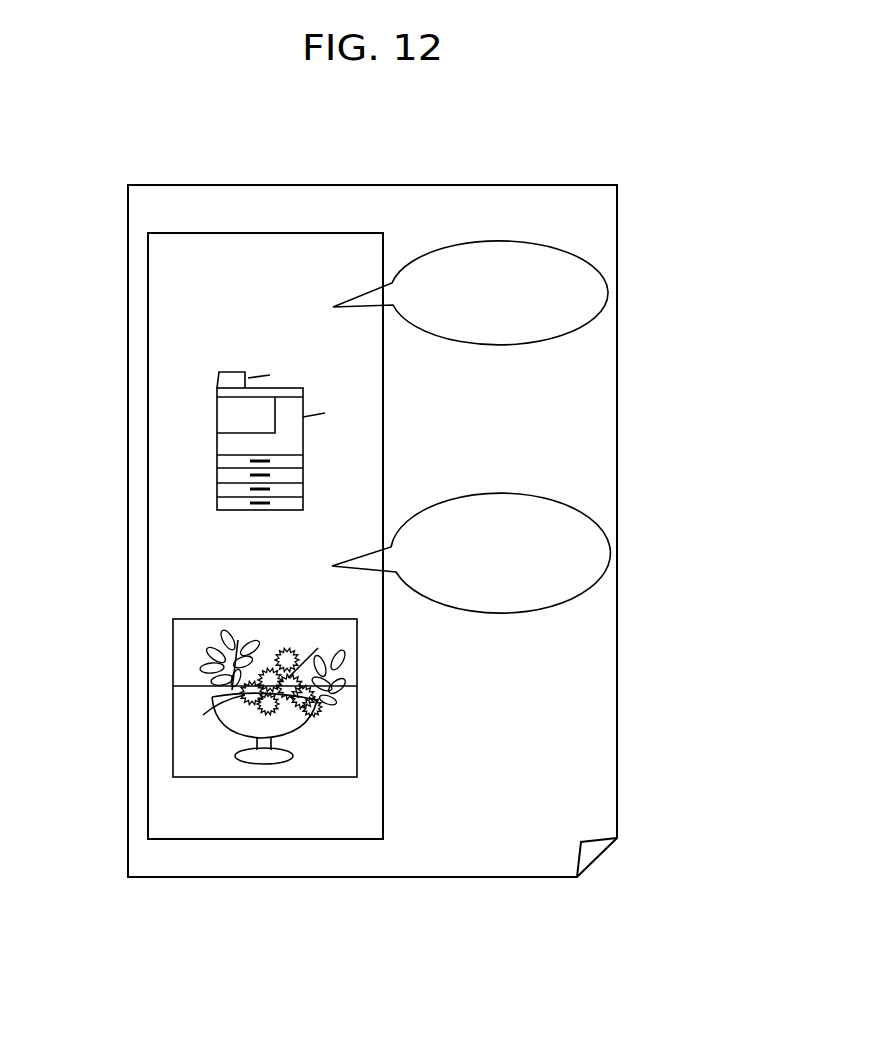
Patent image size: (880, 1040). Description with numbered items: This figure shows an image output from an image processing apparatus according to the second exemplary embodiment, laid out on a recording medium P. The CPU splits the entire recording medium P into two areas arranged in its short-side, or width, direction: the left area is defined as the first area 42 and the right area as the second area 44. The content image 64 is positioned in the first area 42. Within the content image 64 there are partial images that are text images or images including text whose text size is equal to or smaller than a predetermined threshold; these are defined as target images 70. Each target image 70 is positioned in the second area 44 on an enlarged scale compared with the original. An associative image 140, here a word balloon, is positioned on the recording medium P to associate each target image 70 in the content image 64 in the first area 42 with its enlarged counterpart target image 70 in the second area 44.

The first area 42 is at (372, 180).
The second area 44 is at (617, 180).
The target image 70 is at (207, 312).
The associative image 140 is at (548, 237).
The content image 64 is at (148, 662).
The recording medium P is at (617, 472).